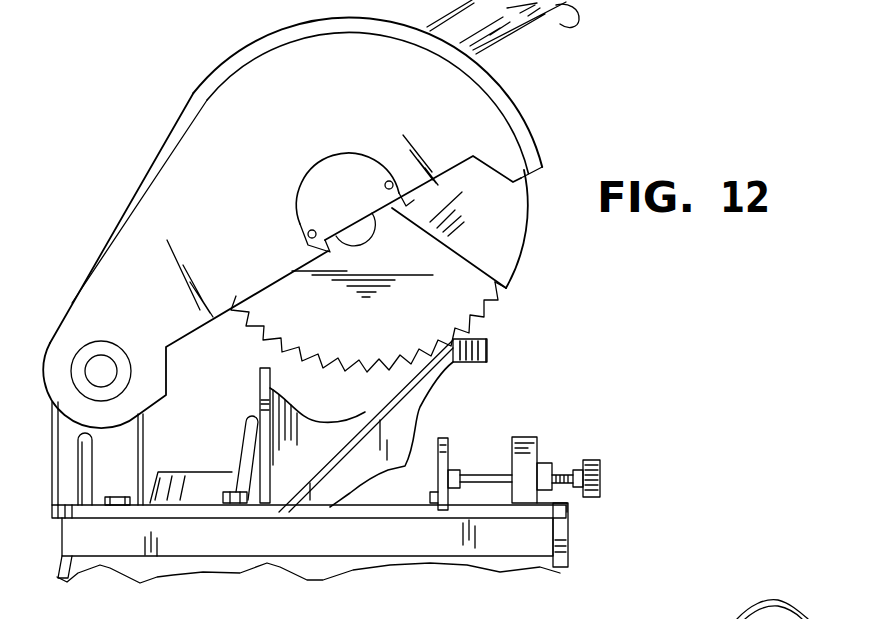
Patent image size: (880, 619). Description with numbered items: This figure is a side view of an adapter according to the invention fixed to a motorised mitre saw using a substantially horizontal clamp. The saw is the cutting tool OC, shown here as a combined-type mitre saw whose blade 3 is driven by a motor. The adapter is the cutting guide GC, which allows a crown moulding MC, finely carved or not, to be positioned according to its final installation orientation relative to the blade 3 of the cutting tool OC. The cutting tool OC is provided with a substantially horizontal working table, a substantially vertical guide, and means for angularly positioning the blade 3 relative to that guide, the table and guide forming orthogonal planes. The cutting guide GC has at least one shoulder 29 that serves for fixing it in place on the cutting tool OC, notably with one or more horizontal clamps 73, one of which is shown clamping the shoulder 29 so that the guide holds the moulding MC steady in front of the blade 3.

The cutting tool OC is at (204, 92).
The blade 3 is at (479, 289).
The crown moulding MC is at (480, 348).
The cutting guide GC is at (298, 513).
The shoulder 29 is at (420, 497).
The horizontal clamp 73 is at (530, 455).